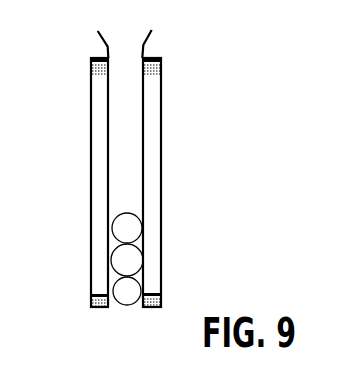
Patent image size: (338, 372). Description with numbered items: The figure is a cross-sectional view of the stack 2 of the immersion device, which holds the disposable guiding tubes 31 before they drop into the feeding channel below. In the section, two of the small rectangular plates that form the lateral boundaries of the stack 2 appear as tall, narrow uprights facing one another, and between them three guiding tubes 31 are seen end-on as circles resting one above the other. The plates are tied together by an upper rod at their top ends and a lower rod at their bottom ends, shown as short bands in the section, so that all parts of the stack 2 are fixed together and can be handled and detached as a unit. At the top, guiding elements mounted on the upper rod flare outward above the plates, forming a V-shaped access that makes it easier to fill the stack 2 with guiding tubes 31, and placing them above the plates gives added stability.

The stack 2 is at (194, 141).
The guiding tube 31 is at (124, 292).